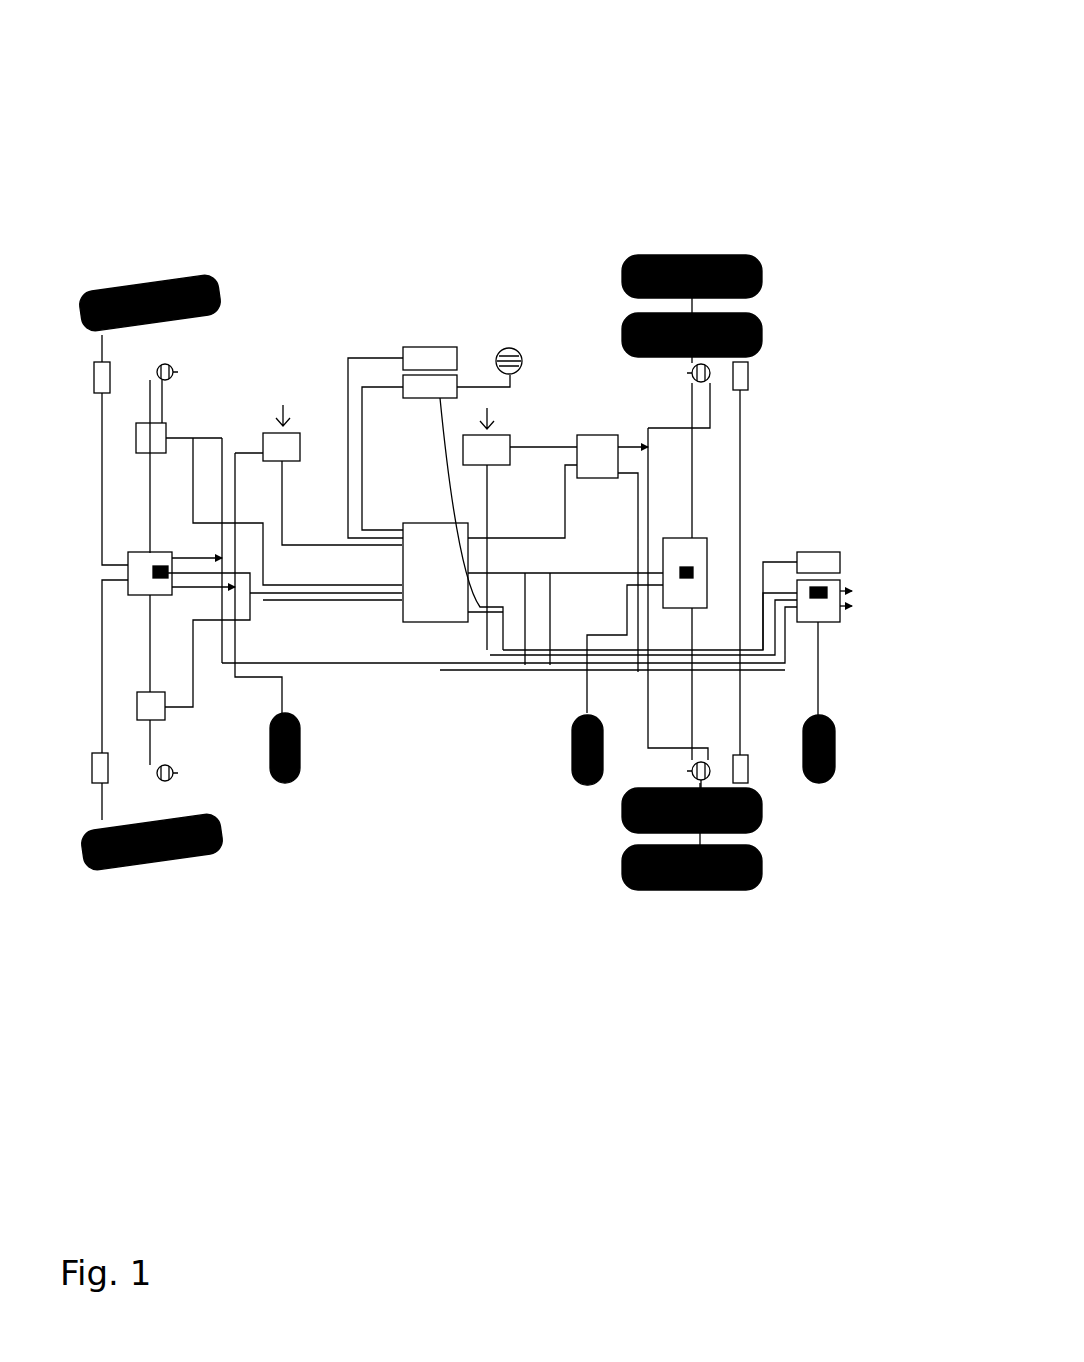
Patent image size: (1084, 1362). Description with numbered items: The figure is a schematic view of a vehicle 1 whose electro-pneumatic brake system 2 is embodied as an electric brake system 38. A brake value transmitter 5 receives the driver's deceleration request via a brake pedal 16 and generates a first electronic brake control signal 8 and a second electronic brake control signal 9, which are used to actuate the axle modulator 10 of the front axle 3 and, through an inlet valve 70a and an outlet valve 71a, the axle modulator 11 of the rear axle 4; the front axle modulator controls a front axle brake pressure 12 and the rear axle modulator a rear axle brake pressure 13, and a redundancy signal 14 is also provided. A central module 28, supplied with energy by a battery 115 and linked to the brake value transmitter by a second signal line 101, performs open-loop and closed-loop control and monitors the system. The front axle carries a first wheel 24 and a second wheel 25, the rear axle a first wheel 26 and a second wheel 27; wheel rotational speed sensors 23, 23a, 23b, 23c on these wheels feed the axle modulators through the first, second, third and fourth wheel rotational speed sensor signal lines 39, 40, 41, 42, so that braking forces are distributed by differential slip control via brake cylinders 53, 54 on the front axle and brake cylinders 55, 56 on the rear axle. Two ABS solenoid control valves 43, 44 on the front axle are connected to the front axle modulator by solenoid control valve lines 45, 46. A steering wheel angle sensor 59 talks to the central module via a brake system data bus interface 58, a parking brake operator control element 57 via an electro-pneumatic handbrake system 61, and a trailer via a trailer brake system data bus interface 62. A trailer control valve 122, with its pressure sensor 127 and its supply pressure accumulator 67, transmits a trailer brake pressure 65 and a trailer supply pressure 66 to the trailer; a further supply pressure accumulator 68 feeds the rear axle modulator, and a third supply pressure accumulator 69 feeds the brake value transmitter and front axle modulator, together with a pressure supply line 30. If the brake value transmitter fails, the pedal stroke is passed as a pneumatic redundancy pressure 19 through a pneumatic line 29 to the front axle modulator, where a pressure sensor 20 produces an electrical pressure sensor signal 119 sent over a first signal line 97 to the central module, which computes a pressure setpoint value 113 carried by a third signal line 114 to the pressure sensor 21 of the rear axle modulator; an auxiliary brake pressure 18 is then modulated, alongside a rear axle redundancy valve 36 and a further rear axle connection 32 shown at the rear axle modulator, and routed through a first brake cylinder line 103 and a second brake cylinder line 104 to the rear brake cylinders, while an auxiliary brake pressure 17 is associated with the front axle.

The vehicle 1 is at (516, 1144).
The electro-pneumatic brake system 2 is at (487, 70).
The front axle 3 is at (266, 1149).
The rear axle 4 is at (860, 350).
The brake value transmitter 5 is at (430, 372).
The first electronic brake control signal 8 is at (362, 387).
The second electronic brake control signal 9 is at (400, 350).
The axle modulator of the front axle 10 is at (270, 432).
The axle modulator of the rear axle 11 is at (707, 548).
The front axle brake pressure 12 is at (208, 560).
The rear axle brake pressure 13 is at (707, 590).
The redundancy signal 14 is at (222, 668).
The brake pedal 16 is at (300, 447).
The auxiliary brake pressure of the front axle 17 is at (140, 865).
The auxiliary brake pressure of the rear axle 18 is at (707, 608).
The pneumatic redundancy pressure 19 is at (287, 418).
The pressure sensor of the axle modulator of the front axle 20 is at (222, 827).
The pressure sensor of the axle modulator of the rear axle 21 is at (707, 565).
The first wheel rotational speed sensor 23 is at (103, 290).
The second wheel rotational speed sensor 23a is at (100, 863).
The third wheel rotational speed sensor 23b is at (748, 362).
The fourth wheel rotational speed sensor 23c is at (762, 790).
The first wheel of the front axle 24 is at (132, 282).
The second wheel of the front axle 25 is at (153, 867).
The first wheel of the rear axle 26 is at (733, 257).
The second wheel of the rear axle 27 is at (683, 890).
The central module 28 is at (412, 622).
The pneumatic line of the brake value transmitter 29 is at (348, 358).
The pressure supply line 30 is at (290, 693).
The rear axle supply line 32 is at (707, 540).
The rear axle redundancy valve 36 is at (832, 733).
The electric brake system 38 is at (662, 1034).
The first wheel rotational speed sensor signal line 39 is at (140, 287).
The second wheel rotational speed sensor signal line 40 is at (108, 868).
The third wheel rotational speed sensor signal line 41 is at (745, 480).
The fourth wheel rotational speed sensor signal line 42 is at (785, 672).
The ABS solenoid control valve of the first front wheel 43 is at (215, 277).
The ABS solenoid control valve of the second front wheel 44 is at (150, 867).
The solenoid control valve line of the first front wheel 45 is at (175, 362).
The solenoid control valve line of the second front wheel 46 is at (223, 873).
The brake cylinder of the first front wheel 53 is at (163, 277).
The brake cylinder of the second front wheel 54 is at (153, 865).
The brake cylinder of the first rear wheel 55 is at (713, 257).
The brake cylinder of the second rear wheel 56 is at (762, 860).
The parking brake operator control element 57 is at (525, 665).
The brake system data bus interface 58 is at (490, 653).
The steering wheel angle sensor 59 is at (600, 435).
The electro-pneumatic handbrake system 61 is at (640, 257).
The trailer brake system data bus interface 62 is at (840, 562).
The trailer brake pressure 65 is at (850, 592).
The trailer supply pressure 66 is at (850, 608).
The supply pressure accumulator of the trailer control valve 67 is at (740, 783).
The supply pressure accumulator of the rear axle modulator 68 is at (550, 665).
The supply pressure accumulator of the front axle modulator and brake value transmit 69 is at (283, 785).
The inlet valve of the rear axle modulator 70a is at (707, 573).
The outlet valve of the rear axle modulator 71a is at (707, 556).
The first signal line 97 is at (338, 738).
The second signal line 101 is at (509, 348).
The first brake cylinder line 103 is at (700, 440).
The second brake cylinder line 104 is at (832, 772).
The pressure setpoint value 113 is at (550, 665).
The third signal line 114 is at (525, 673).
The battery 115 is at (500, 435).
The electrical pressure sensor signal 119 is at (340, 697).
The trailer control valve 122 is at (840, 623).
The pressure sensor of the trailer control valve 127 is at (840, 583).